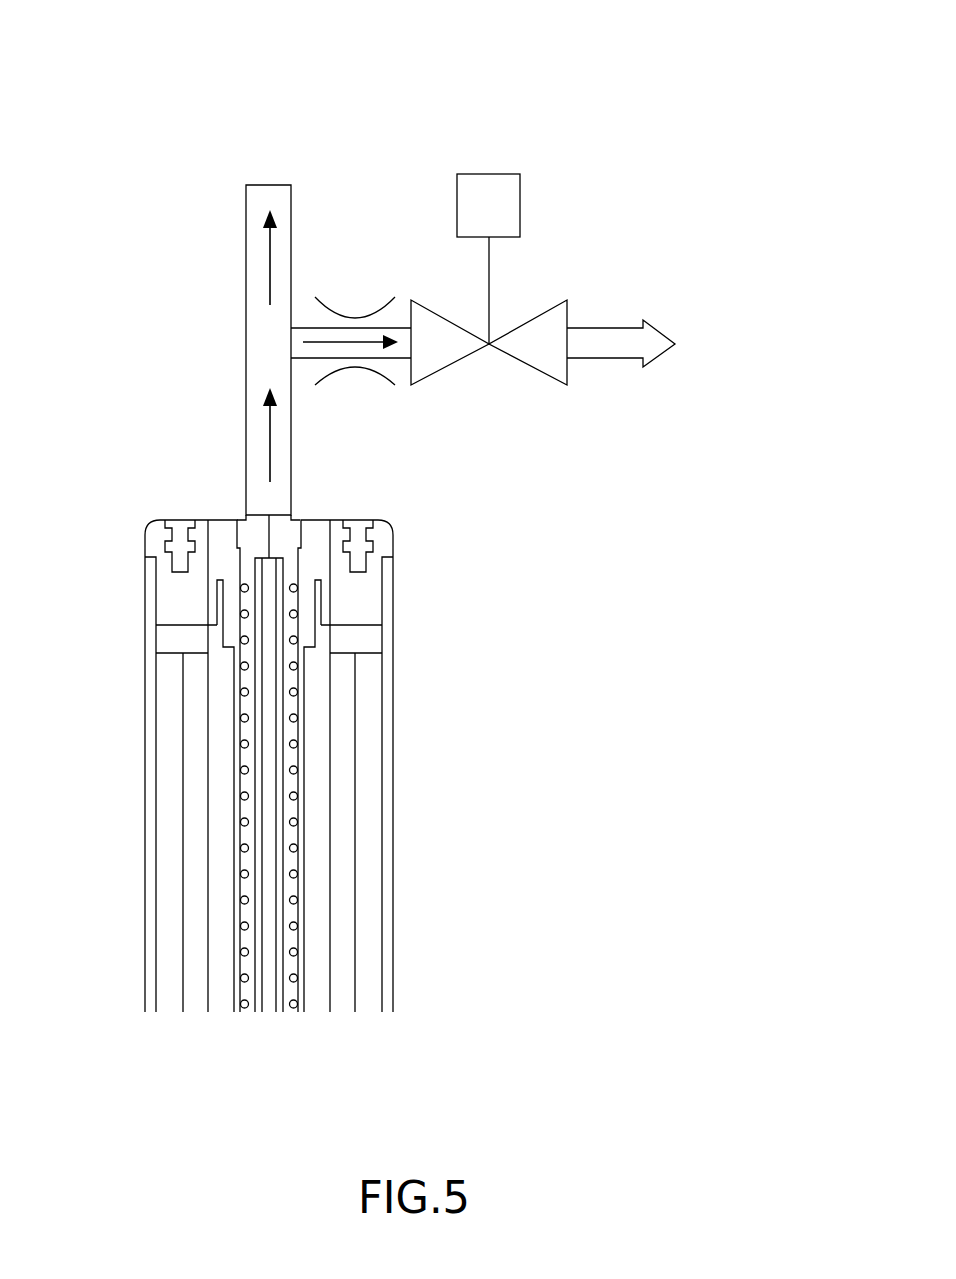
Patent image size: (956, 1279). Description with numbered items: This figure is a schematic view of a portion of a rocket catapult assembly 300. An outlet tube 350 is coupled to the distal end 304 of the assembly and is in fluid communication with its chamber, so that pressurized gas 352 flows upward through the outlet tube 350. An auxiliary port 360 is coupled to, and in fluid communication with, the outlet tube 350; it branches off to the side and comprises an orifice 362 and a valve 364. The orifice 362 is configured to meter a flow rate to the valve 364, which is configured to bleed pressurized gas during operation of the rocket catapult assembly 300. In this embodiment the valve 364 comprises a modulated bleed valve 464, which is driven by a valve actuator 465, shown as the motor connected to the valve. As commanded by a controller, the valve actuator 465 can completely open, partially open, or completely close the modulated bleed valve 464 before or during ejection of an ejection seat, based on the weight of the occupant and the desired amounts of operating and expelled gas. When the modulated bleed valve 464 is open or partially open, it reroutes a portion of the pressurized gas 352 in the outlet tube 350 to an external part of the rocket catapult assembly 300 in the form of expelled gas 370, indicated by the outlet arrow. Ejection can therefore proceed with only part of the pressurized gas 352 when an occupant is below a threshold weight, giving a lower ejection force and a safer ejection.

The rocket catapult assembly 300 is at (660, 68).
The distal end 304 is at (240, 583).
The outlet tube 350 is at (248, 267).
The pressurized gas 352 is at (267, 223).
The auxiliary port 360 is at (372, 240).
The orifice 362 is at (367, 353).
The valve 364 is at (474, 367).
The modulated bleed valve 464 is at (523, 345).
The valve actuator 465 is at (518, 205).
The expelled gas 370 is at (623, 345).